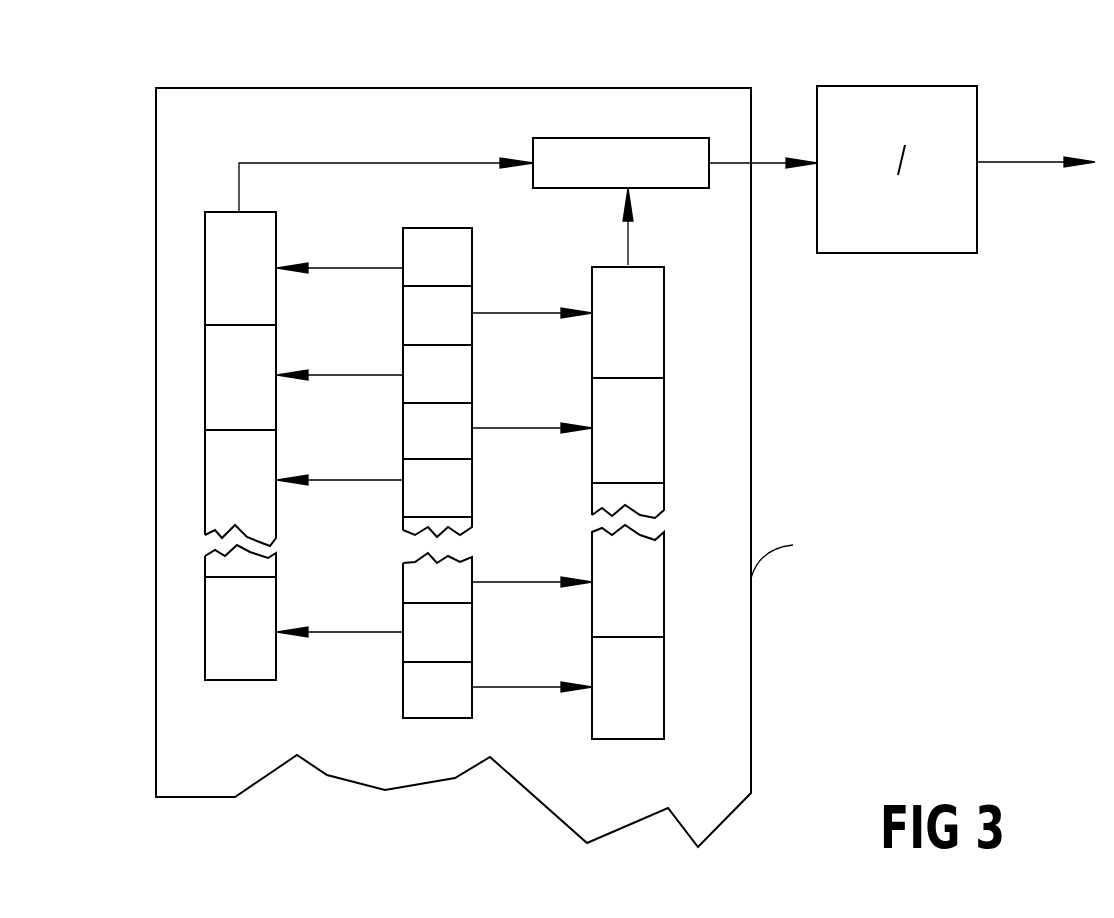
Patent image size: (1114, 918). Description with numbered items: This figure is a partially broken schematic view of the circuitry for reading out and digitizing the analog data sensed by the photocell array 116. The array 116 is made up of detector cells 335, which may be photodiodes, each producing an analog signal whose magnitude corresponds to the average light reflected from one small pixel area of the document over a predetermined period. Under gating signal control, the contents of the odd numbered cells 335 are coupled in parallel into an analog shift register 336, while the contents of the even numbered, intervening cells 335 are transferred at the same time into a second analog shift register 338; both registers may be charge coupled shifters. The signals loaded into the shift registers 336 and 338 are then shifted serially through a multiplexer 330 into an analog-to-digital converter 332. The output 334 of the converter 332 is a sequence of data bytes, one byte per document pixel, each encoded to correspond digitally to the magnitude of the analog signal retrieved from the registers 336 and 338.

The sensor array 116 is at (370, 88).
The multiplexer 330 is at (675, 188).
The analog-to-digital converter 332 is at (923, 253).
The output 334 is at (1022, 165).
The detector cell 335 is at (443, 728).
The analog shift register 336 is at (205, 267).
The analog shift register 338 is at (632, 750).